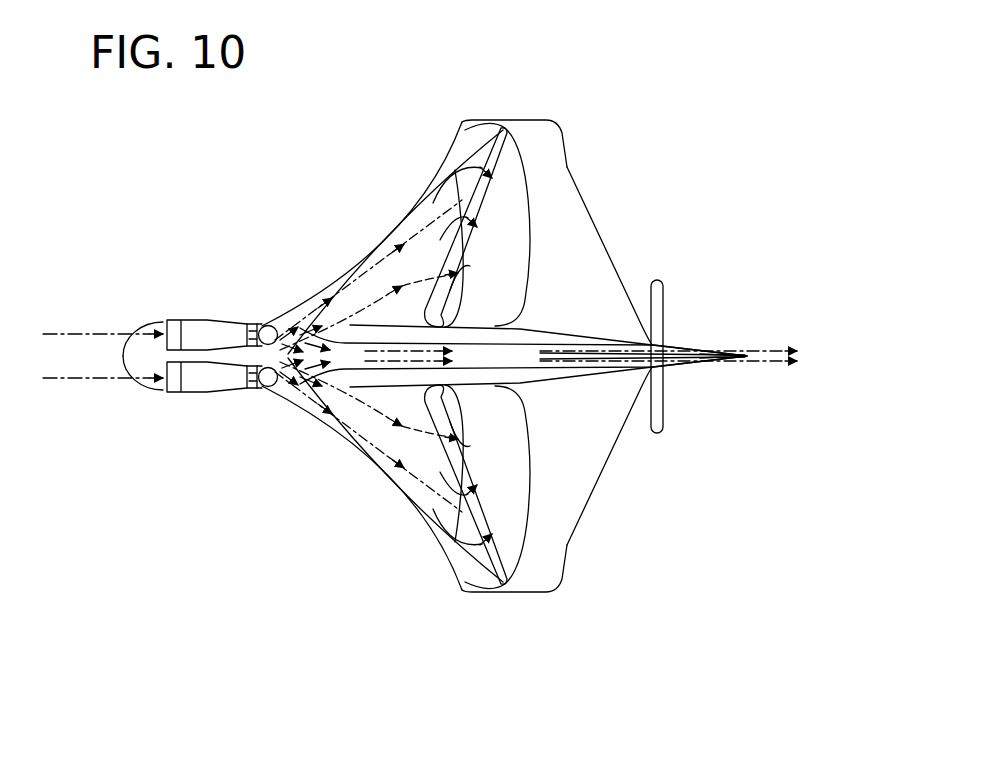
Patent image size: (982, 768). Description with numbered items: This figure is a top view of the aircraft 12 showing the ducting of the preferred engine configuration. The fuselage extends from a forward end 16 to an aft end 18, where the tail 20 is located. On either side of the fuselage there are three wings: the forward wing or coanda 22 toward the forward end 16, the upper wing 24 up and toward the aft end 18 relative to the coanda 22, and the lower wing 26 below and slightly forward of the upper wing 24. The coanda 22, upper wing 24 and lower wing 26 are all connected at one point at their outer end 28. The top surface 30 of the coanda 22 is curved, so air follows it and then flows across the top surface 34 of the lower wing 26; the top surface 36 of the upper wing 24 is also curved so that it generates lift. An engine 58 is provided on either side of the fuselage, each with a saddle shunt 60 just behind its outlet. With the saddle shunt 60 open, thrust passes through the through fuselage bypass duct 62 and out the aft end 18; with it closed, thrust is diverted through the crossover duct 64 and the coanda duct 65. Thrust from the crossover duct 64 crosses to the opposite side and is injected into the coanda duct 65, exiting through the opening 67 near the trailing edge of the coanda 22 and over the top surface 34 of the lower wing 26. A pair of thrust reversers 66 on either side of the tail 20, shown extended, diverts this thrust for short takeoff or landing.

The aircraft 12 is at (160, 216).
The forward end 16 is at (120, 357).
The aft end 18 is at (667, 367).
The tail 20 is at (727, 350).
The coanda 22 is at (358, 250).
The upper wing 24 is at (597, 236).
The lower wing 26 is at (412, 240).
The outer end 28 is at (512, 118).
The top surface of the coanda 30 is at (385, 260).
The top surface of the lower wing 34 is at (458, 165).
The top surface of the upper wing 36 is at (545, 182).
The engine 58 is at (200, 318).
The saddle shunt 60 is at (265, 325).
The through fuselage bypass duct 62 is at (343, 322).
The crossover duct 64 is at (277, 328).
The coanda duct 65 is at (297, 327).
The thrust reversers 66 is at (666, 310).
The opening 67 is at (430, 198).